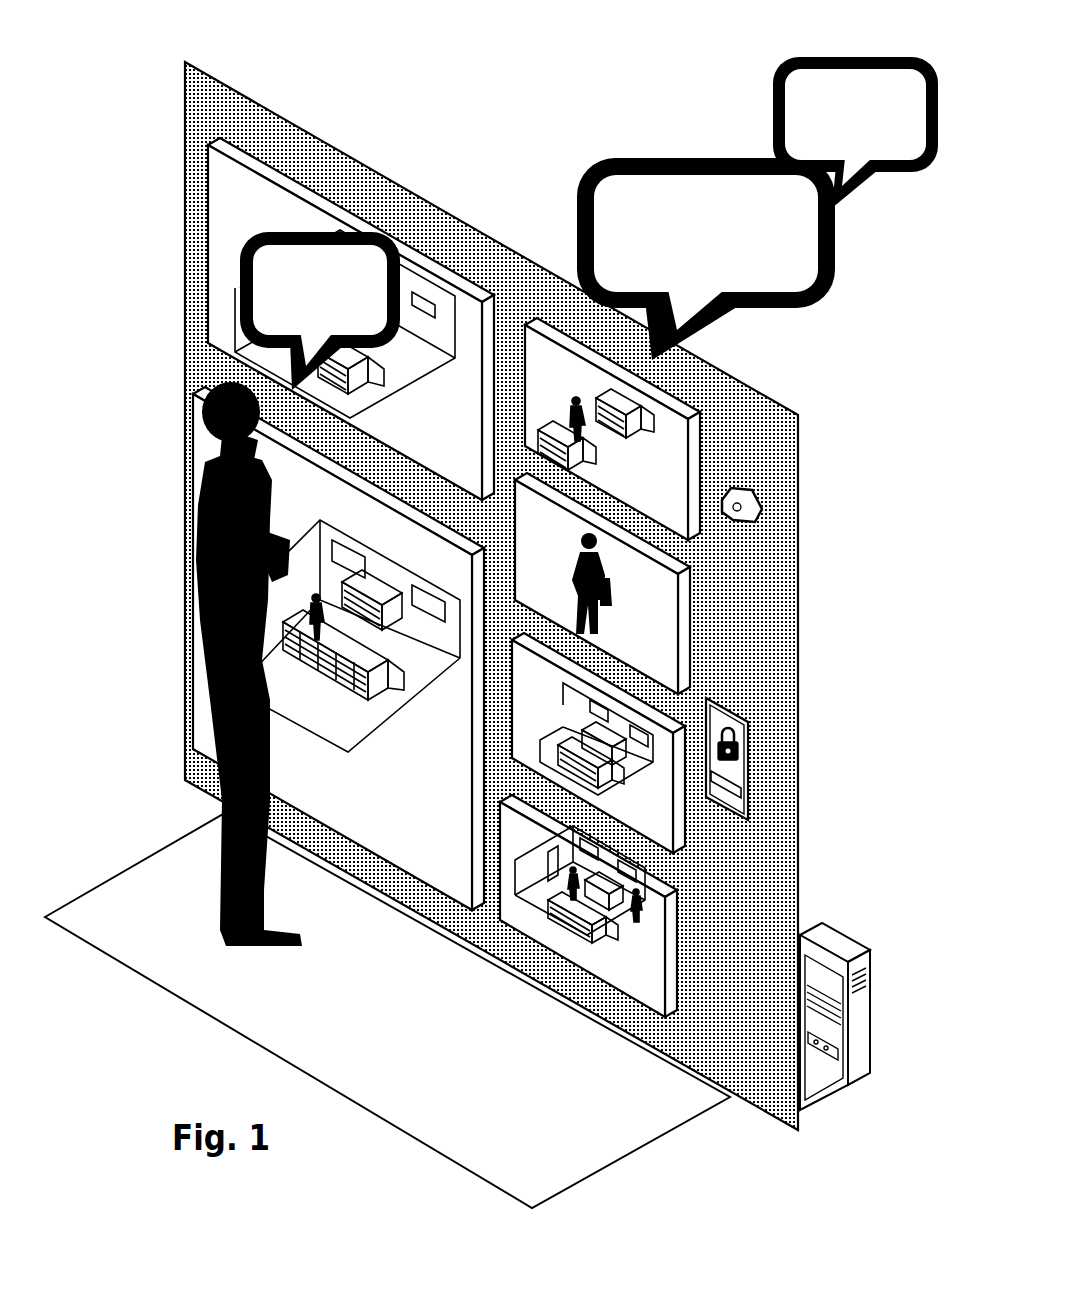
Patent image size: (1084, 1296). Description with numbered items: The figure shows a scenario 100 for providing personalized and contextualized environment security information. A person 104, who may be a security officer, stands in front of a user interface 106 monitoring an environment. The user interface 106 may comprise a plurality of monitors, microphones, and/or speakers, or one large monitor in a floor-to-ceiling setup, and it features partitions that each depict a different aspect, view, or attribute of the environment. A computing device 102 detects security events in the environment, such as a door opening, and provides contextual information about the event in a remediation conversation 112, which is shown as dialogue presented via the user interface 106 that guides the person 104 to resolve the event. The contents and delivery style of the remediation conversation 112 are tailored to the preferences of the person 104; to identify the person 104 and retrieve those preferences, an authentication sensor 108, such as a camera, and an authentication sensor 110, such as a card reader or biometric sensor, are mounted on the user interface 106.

The scenario 100 is at (448, 95).
The computing device 102 is at (830, 955).
The person 104 is at (197, 400).
The user interface 106 is at (762, 413).
The authentication sensor 108 is at (750, 505).
The authentication sensor 110 is at (745, 720).
The remediation conversation 112 is at (700, 158).